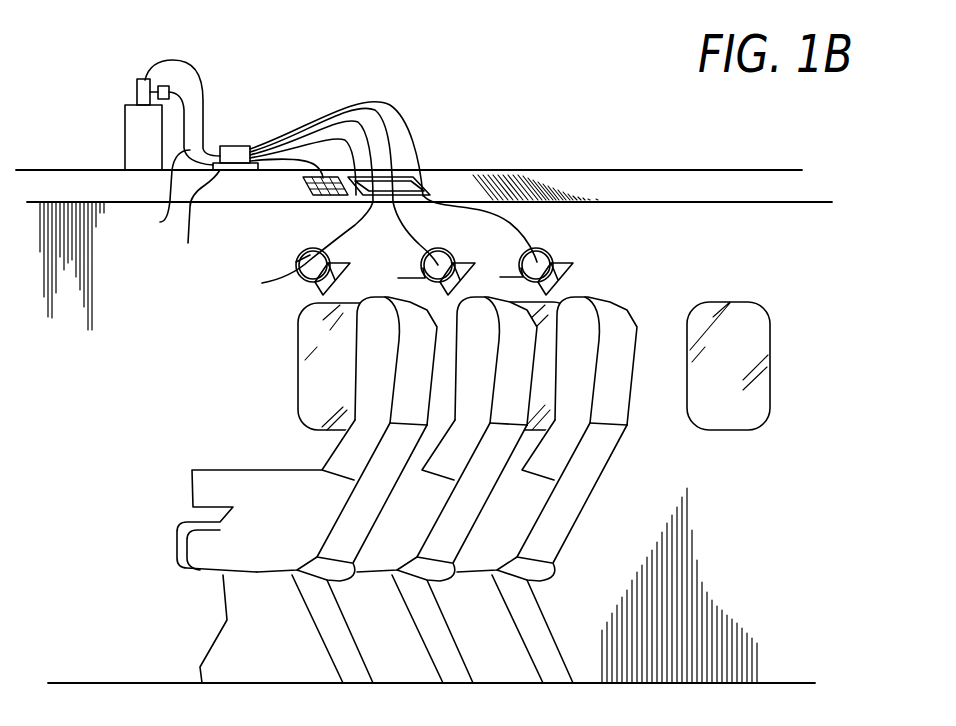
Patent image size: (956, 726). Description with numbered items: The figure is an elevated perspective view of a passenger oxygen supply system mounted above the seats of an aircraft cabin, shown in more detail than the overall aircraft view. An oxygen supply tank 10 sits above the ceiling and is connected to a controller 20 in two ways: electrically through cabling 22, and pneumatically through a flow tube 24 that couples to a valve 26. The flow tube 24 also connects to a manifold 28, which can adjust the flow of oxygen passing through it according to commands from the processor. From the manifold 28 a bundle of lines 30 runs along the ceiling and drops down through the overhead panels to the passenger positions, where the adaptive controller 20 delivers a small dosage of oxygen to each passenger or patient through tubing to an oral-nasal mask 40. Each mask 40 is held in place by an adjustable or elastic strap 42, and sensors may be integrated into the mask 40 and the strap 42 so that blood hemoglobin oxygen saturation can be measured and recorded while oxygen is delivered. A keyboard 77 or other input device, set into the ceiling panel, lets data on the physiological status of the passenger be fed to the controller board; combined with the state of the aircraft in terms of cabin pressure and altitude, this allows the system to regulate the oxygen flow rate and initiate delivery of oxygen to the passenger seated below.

The oxygen supply tank 10 is at (125, 148).
The controller 20 is at (196, 219).
The cabling 22 is at (207, 107).
The flow tube 24 is at (160, 222).
The valve 26 is at (165, 85).
The manifold 28 is at (233, 146).
The cable bundle 30 is at (392, 106).
The oral-nasal mask 40 is at (350, 263).
The strap 42 is at (262, 283).
The keyboard 77 is at (327, 188).